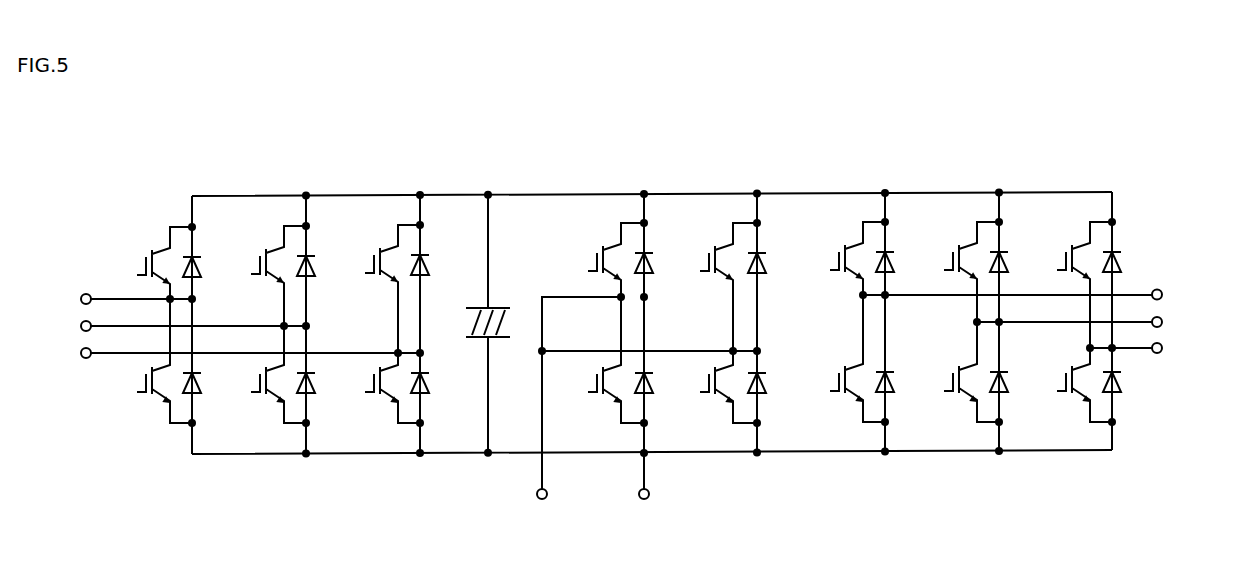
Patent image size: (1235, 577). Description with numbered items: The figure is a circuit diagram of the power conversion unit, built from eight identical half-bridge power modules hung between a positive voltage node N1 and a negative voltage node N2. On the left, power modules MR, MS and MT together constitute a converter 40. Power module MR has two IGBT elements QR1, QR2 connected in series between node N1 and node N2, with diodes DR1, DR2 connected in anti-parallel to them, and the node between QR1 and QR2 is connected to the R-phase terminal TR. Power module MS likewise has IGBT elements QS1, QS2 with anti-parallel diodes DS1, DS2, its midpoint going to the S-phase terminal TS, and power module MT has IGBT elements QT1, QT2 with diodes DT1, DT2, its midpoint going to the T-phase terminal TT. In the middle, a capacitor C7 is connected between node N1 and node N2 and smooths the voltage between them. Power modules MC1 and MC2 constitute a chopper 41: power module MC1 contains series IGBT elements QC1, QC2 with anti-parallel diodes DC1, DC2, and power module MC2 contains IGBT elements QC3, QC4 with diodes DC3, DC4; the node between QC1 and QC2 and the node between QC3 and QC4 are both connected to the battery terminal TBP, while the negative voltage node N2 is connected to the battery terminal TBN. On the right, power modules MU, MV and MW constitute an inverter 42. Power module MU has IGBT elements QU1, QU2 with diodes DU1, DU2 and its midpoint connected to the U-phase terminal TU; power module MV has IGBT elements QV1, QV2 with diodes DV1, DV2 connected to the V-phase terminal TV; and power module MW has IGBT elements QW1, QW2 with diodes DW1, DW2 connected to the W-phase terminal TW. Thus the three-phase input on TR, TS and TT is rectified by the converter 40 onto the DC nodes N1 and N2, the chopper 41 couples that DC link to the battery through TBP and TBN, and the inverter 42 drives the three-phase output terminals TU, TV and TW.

The converter 40 is at (120, 143).
The chopper 41 is at (573, 143).
The inverter 42 is at (813, 143).
The power module MR is at (122, 186).
The power module MS is at (236, 186).
The power module MT is at (350, 186).
The power module MC1 is at (573, 186).
The power module MC2 is at (687, 186).
The power module MU is at (815, 186).
The power module MV is at (929, 186).
The power module MW is at (1042, 186).
The IGBT element QR1 is at (164, 252).
The IGBT element QR2 is at (146, 395).
The diode DR1 is at (220, 252).
The diode DR2 is at (201, 378).
The IGBT element QS1 is at (278, 251).
The IGBT element QS2 is at (260, 395).
The diode DS1 is at (334, 251).
The diode DS2 is at (315, 378).
The IGBT element QT1 is at (392, 250).
The IGBT element QT2 is at (374, 395).
The diode DT1 is at (448, 250).
The diode DT2 is at (429, 378).
The IGBT element QC1 is at (615, 248).
The IGBT element QC2 is at (597, 395).
The IGBT element QC3 is at (727, 248).
The IGBT element QC4 is at (709, 395).
The diode DC1 is at (672, 248).
The diode DC2 is at (653, 378).
The diode DC3 is at (785, 248).
The diode DC4 is at (766, 378).
The IGBT element QU1 is at (857, 247).
The IGBT element QU2 is at (839, 394).
The diode DU1 is at (913, 247).
The diode DU2 is at (894, 377).
The IGBT element QV1 is at (971, 247).
The IGBT element QV2 is at (953, 394).
The diode DV1 is at (1027, 247).
The diode DV2 is at (1008, 377).
The IGBT element QW1 is at (1084, 247).
The IGBT element QW2 is at (1066, 394).
The diode DW1 is at (1140, 247).
The diode DW2 is at (1121, 377).
The capacitor C7 is at (497, 305).
The positive voltage node N1 is at (488, 192).
The negative voltage node N2 is at (488, 457).
The battery terminal TBP is at (542, 500).
The battery terminal TBN is at (644, 500).
The R-phase terminal TR is at (80, 299).
The S-phase terminal TS is at (80, 326).
The T-phase terminal TT is at (80, 353).
The U-phase terminal TU is at (1163, 294).
The V-phase terminal TV is at (1163, 322).
The W-phase terminal TW is at (1163, 348).